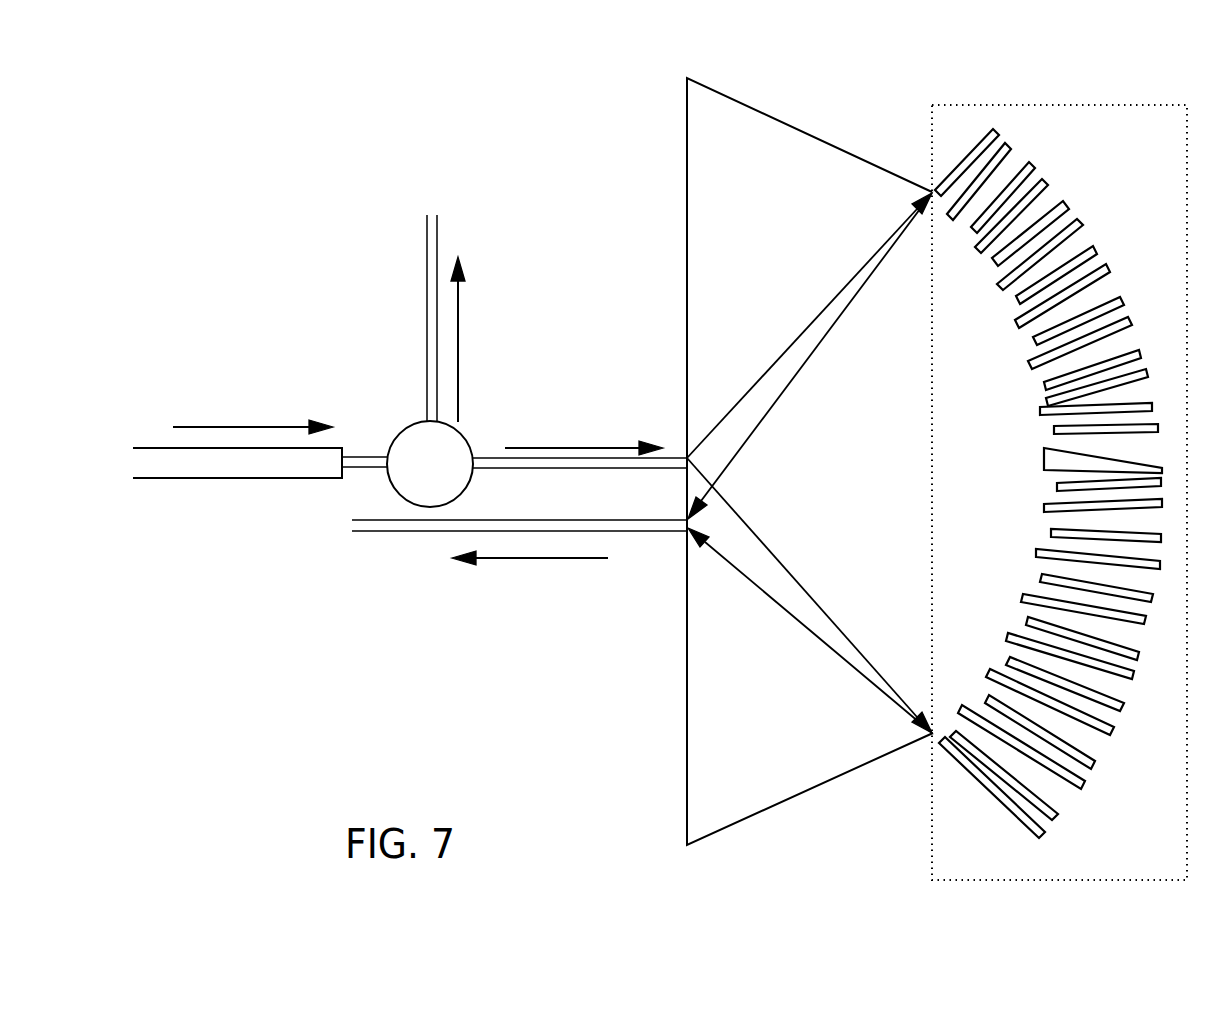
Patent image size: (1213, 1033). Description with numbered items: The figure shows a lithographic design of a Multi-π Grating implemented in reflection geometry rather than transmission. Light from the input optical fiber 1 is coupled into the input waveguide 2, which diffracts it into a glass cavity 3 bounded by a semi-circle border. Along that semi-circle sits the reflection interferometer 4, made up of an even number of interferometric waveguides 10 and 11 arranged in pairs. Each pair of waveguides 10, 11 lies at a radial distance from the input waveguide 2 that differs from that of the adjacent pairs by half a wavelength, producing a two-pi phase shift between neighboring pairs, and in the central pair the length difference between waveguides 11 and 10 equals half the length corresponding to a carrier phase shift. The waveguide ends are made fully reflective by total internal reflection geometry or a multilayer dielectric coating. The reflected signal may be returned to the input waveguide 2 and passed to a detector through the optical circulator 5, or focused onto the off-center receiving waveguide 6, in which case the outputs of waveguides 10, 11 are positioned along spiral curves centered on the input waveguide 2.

The input optical fiber 1 is at (260, 468).
The input waveguide 2 is at (580, 430).
The glass cavity 3 is at (810, 461).
The reflection interferometer 4 is at (1006, 492).
The optical circulator 5 is at (430, 361).
The receiving waveguide 6 is at (519, 566).
The interferometric waveguide 10 is at (974, 271).
The interferometric waveguide 11 is at (988, 307).